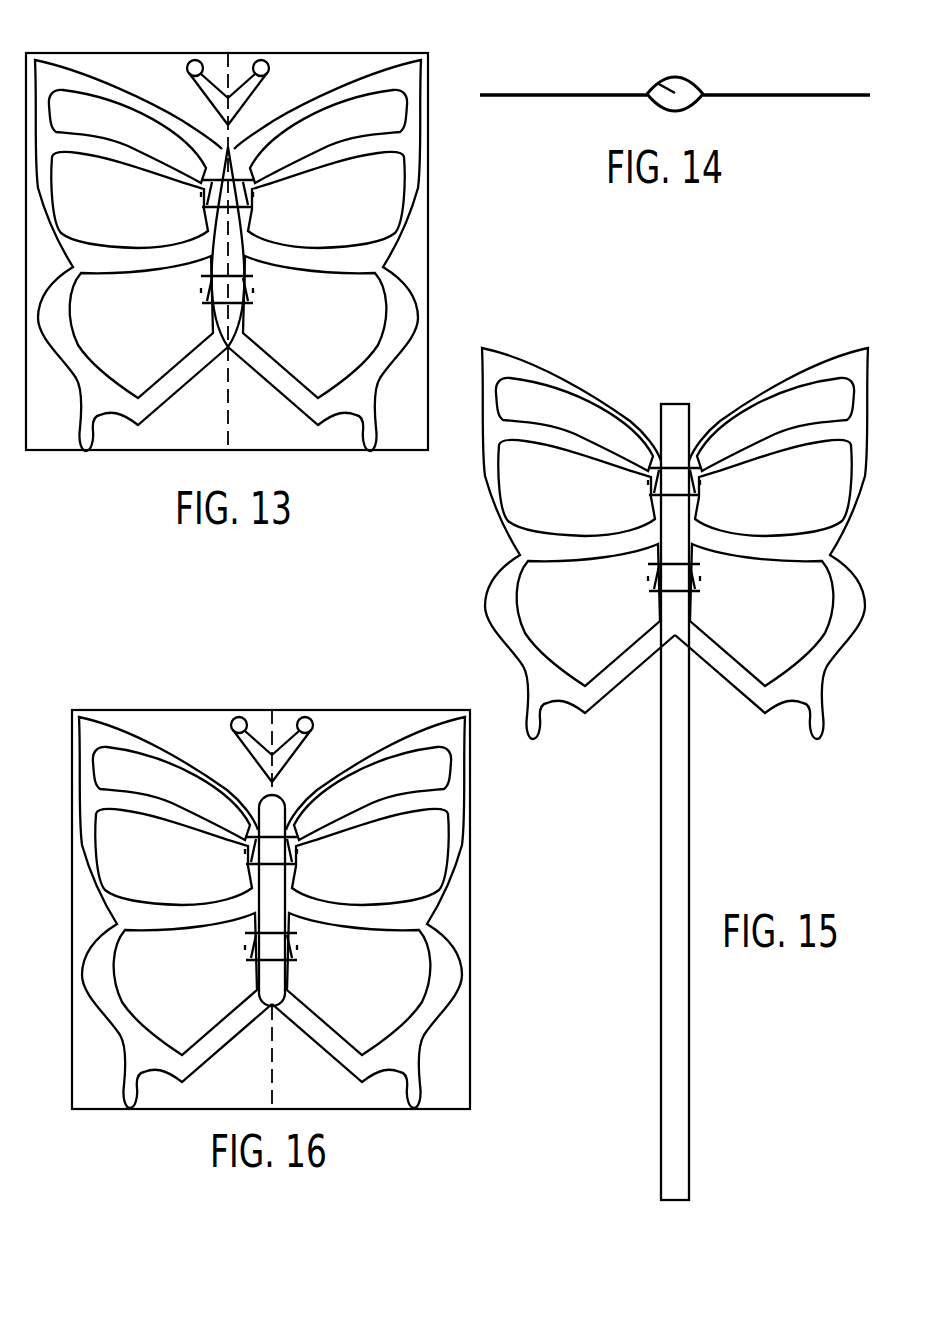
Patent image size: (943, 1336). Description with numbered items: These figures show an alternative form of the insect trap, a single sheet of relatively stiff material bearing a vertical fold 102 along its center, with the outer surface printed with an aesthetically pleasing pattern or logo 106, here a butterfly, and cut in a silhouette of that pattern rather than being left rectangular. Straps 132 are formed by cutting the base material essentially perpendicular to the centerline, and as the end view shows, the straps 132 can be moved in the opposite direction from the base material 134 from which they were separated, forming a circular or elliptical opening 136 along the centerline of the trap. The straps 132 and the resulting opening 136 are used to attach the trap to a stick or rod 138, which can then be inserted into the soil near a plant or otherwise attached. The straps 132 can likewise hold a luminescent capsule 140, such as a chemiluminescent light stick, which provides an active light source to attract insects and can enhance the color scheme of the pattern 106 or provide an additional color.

In FIG. 13, the vertical fold 102 is at (225, 428).
In FIG. 15, the pattern or logo 106 is at (478, 608).
In FIG. 13, the straps 132 is at (254, 203).
In FIG. 14, the straps 132 is at (689, 80).
In FIG. 15, the straps 132 is at (649, 491).
In FIG. 14, the base material 134 is at (698, 110).
In FIG. 14, the opening 136 is at (657, 83).
In FIG. 15, the stick or rod 138 is at (690, 787).
In FIG. 16, the stick or rod 138 is at (299, 858).
In FIG. 16, the luminescent capsule 140 is at (289, 999).